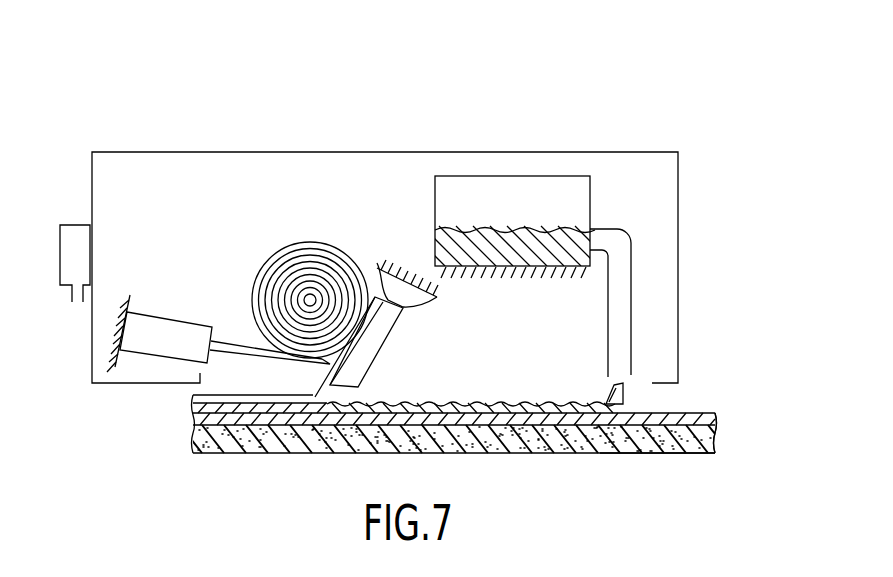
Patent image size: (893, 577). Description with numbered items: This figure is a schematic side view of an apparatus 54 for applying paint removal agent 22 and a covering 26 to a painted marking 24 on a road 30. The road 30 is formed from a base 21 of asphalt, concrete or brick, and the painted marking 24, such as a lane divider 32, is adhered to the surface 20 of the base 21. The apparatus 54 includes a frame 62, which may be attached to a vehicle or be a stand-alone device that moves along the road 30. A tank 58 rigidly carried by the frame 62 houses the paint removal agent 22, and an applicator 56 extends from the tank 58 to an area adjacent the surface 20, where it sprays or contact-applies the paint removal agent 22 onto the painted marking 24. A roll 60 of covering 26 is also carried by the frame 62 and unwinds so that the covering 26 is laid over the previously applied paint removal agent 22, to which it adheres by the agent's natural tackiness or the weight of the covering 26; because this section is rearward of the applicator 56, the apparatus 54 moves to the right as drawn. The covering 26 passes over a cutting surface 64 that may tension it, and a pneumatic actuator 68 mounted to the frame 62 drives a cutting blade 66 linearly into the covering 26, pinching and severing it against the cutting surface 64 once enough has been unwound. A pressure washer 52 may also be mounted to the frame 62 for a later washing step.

The surface 20 is at (453, 415).
The base 21 is at (208, 436).
The paint removal agent 22 is at (475, 238).
The painted marking 24 is at (702, 425).
The covering 26 is at (253, 395).
The road 30 is at (728, 455).
The lane divider 32 is at (715, 420).
The pressure washer 52 is at (72, 225).
The apparatus 54 is at (716, 162).
The applicator 56 is at (608, 330).
The tank 58 is at (552, 183).
The roll 60 is at (283, 268).
The frame 62 is at (420, 152).
The cutting surface 64 is at (330, 356).
The cutting blade 66 is at (248, 348).
The pneumatic actuator 68 is at (175, 323).